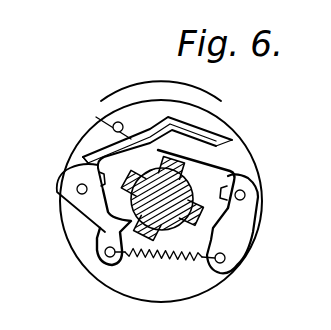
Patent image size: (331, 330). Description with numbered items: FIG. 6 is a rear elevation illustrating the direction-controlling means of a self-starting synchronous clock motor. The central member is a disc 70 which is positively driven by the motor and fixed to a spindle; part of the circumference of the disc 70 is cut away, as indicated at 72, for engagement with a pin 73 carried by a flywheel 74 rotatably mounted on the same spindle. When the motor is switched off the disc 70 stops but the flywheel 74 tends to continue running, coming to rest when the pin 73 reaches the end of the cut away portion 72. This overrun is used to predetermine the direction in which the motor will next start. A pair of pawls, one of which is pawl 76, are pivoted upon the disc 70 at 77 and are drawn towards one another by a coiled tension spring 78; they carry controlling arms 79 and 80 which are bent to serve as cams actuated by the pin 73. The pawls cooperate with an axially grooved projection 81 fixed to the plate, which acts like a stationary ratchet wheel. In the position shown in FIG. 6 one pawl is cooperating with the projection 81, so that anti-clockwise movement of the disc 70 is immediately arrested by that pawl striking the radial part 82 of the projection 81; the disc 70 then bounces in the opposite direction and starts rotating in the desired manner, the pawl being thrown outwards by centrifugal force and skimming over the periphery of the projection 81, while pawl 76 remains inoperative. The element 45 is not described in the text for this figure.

The lug 45 is at (60, 185).
The disc 70 is at (240, 152).
The cut away portion 72 is at (228, 134).
The pin 73 is at (118, 122).
The flywheel 74 is at (160, 108).
The pawl 76 is at (223, 230).
The pivot 77 is at (82, 184).
The coiled tension spring 78 is at (183, 263).
The controlling arm 79 is at (97, 152).
The controlling arm 80 is at (234, 168).
The axially grooved projection 81 is at (135, 250).
The radial part 82 is at (120, 227).